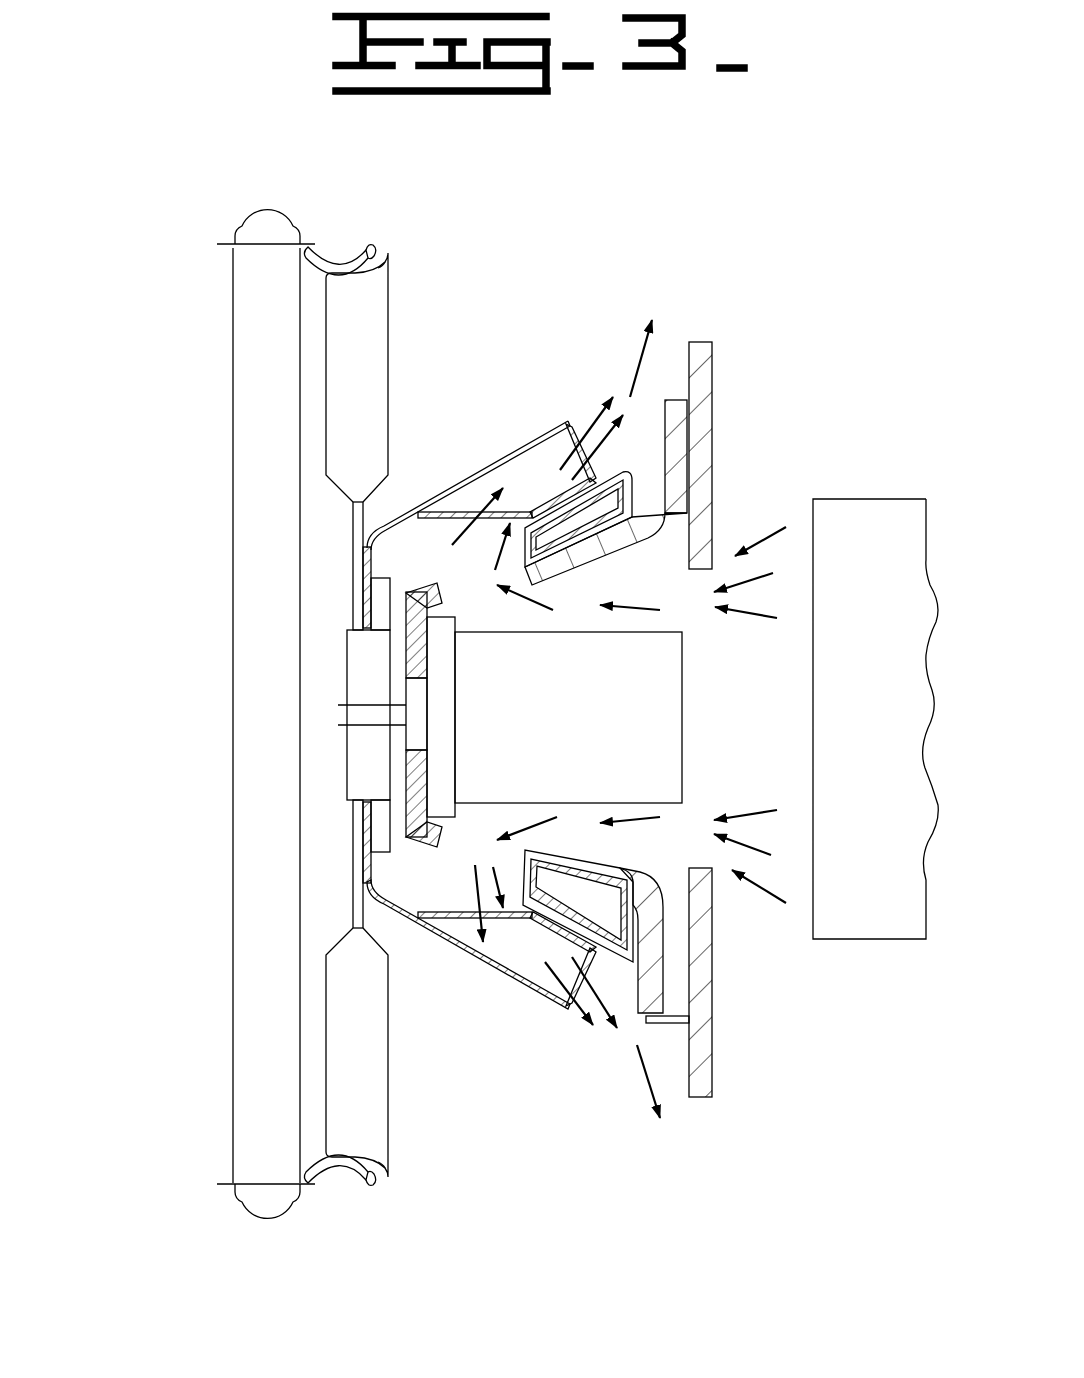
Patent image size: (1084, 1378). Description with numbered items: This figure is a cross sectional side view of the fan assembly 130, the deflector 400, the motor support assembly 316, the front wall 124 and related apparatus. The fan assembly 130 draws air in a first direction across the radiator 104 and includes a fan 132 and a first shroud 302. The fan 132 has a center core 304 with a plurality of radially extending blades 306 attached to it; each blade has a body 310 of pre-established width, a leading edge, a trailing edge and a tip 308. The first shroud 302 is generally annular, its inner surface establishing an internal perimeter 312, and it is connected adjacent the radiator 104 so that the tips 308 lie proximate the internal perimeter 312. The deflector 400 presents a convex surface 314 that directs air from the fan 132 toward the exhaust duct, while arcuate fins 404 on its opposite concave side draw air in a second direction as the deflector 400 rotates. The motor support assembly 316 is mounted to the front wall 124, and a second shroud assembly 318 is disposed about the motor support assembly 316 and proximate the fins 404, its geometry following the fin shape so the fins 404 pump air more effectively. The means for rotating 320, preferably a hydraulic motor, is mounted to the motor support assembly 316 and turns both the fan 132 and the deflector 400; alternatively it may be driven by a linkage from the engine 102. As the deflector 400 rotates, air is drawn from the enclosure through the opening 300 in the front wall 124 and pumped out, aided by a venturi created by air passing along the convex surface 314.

The engine 102 is at (900, 757).
The radiator 104 is at (288, 700).
The front wall 124 is at (712, 445).
The fan assembly 130 is at (408, 1240).
The fan 132 is at (398, 317).
The opening 300 is at (701, 626).
The first shroud 302 is at (319, 254).
The center core 304 is at (365, 516).
The blades 306 is at (334, 492).
The tip 308 is at (388, 256).
The body 310 is at (380, 369).
The internal perimeter 312 is at (368, 250).
The convex surface 314 is at (510, 457).
The motor support assembly 316 is at (580, 557).
The second shroud assembly 318 is at (604, 513).
The means for rotating 320 is at (583, 731).
The deflector 400 is at (366, 546).
The arcuate fins 404 is at (562, 487).